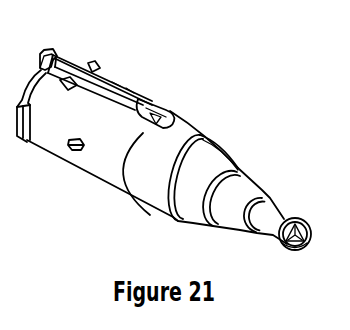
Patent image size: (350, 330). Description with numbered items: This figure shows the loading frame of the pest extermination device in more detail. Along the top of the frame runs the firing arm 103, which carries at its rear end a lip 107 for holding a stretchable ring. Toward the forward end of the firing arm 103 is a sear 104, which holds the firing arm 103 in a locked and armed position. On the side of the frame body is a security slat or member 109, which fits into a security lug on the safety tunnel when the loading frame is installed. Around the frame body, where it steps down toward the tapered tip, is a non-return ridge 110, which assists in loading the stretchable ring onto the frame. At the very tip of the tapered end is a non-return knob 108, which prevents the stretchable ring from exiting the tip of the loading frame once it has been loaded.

The firing arm 103 is at (92, 67).
The sear 104 is at (143, 102).
The lip 107 is at (52, 55).
The non-return knob 108 is at (294, 218).
The security slat or member 109 is at (73, 151).
The non-return ridge 110 is at (200, 136).